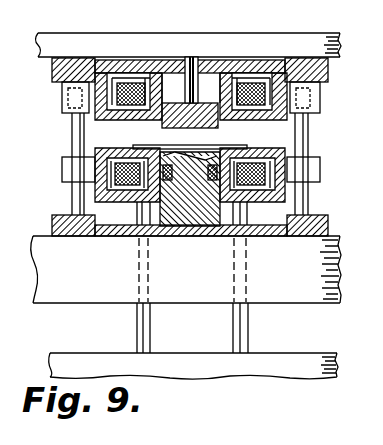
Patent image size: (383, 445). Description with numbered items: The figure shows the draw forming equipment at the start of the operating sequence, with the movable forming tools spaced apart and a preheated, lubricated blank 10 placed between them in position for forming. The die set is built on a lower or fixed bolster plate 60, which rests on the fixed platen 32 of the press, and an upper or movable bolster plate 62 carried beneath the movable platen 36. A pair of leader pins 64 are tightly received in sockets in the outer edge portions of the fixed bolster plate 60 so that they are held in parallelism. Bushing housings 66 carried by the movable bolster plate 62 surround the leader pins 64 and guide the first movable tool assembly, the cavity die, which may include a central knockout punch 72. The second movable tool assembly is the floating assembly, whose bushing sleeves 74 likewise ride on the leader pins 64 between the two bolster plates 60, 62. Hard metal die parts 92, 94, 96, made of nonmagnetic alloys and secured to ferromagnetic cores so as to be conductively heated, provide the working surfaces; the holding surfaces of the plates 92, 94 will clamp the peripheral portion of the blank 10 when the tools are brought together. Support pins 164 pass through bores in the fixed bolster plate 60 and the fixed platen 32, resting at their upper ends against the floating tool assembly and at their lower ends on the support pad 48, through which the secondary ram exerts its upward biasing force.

The movable platen 36 is at (97, 45).
The knockout punch 72 is at (199, 78).
The movable bolster plate 62 is at (258, 63).
The bushing housings 66 is at (62, 90).
The leader pins 64 is at (72, 133).
The bushing sleeves 74 is at (62, 170).
The blank 10 is at (188, 144).
The die part 94 is at (121, 147).
The die part 92 is at (252, 146).
The die part 96 is at (181, 178).
The fixed bolster plate 60 is at (303, 228).
The fixed platen 32 is at (76, 293).
The support pins 164 is at (233, 330).
The support pad 48 is at (285, 357).